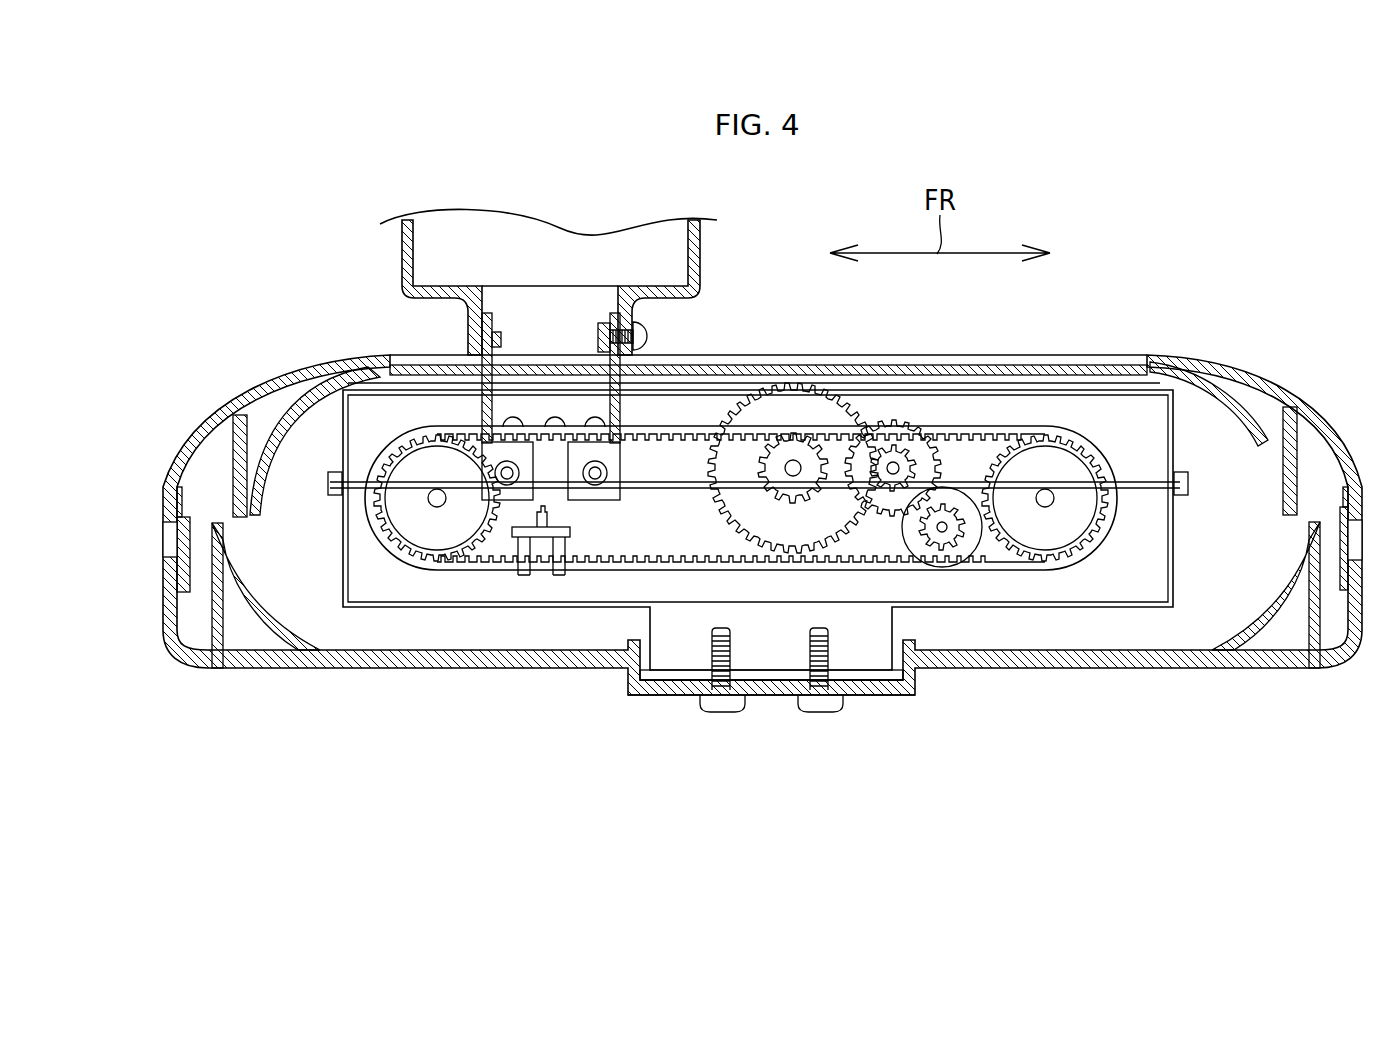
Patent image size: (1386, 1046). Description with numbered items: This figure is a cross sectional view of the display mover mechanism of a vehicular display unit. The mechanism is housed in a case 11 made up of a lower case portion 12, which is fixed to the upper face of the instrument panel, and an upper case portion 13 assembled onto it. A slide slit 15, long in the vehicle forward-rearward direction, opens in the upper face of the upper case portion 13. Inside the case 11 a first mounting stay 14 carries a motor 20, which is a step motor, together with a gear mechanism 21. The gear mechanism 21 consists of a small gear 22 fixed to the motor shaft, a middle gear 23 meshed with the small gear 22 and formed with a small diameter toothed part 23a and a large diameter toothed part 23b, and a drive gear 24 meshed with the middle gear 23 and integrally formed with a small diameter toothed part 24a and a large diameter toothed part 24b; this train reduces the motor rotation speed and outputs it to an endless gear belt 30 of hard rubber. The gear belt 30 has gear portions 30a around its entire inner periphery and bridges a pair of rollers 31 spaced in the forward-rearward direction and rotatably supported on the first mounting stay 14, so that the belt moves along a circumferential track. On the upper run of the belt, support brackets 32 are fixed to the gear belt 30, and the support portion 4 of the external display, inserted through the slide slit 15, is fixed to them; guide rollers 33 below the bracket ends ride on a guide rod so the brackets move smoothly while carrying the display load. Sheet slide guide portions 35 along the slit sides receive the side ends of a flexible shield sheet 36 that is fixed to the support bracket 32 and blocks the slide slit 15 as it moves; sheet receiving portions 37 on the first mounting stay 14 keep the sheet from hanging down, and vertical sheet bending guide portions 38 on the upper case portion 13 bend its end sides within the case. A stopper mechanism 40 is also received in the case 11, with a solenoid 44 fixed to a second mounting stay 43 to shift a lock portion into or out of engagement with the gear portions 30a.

The support portion 4 is at (530, 315).
The case 11 is at (85, 470).
The lower case portion 12 is at (163, 607).
The upper case portion 13 is at (170, 468).
The first mounting stay 14 is at (678, 632).
The slide slit 15 is at (1150, 366).
The motor 20 is at (1030, 607).
The gear mechanism 21 is at (860, 528).
The small gear 22 is at (963, 537).
The middle gear 23 is at (922, 617).
The small diameter toothed part 23a is at (893, 500).
The large diameter toothed part 23b is at (925, 500).
The drive gear 24 is at (784, 598).
The small diameter toothed part 24a is at (790, 527).
The large diameter toothed part 24b is at (785, 480).
The gear belt 30 is at (741, 609).
The gear portions 30a is at (630, 572).
The rollers 31 is at (418, 533).
The support brackets 32 is at (607, 370).
The guide rollers 33 is at (517, 440).
The sheet slide guide portions 35 is at (918, 355).
The shield sheet 36 is at (993, 365).
The sheet receiving portions 37 is at (372, 370).
The sheet bending guide portions 38 is at (232, 450).
The stopper mechanism 40 is at (554, 619).
The second mounting stay 43 is at (528, 578).
The solenoid 44 is at (543, 580).